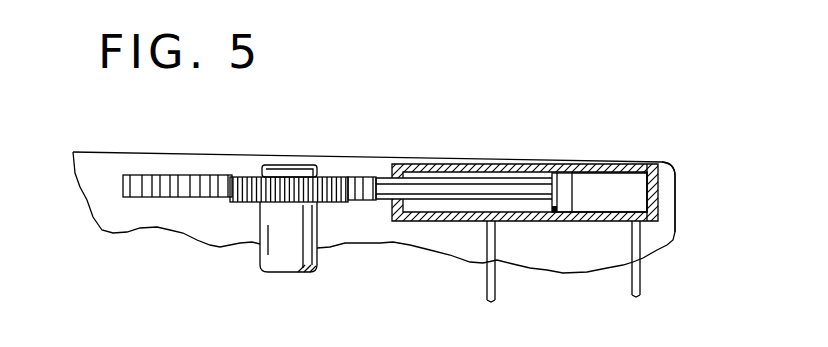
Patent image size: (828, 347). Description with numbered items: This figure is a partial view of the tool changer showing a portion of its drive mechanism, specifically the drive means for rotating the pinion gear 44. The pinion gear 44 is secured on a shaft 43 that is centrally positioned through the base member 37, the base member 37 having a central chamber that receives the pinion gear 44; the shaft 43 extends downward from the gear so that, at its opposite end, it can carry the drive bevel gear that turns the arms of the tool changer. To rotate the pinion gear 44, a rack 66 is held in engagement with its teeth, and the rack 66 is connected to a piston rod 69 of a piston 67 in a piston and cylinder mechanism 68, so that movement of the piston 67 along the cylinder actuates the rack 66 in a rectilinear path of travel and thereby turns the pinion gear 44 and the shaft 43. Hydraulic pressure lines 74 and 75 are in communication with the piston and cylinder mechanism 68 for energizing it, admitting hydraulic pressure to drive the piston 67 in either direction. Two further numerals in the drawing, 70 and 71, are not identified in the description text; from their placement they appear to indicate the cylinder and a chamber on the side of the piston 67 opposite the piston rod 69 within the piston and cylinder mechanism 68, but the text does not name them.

The base member 37 is at (228, 160).
The rack 66 is at (150, 178).
The pinion gear 44 is at (335, 182).
The shaft 43 is at (280, 262).
The cylinder 70 is at (447, 168).
The piston rod 69 is at (490, 188).
The piston 67 is at (562, 178).
The cylinder chamber 71 is at (633, 197).
The piston and cylinder mechanism 68 is at (656, 170).
The hydraulic pressure line 74 is at (480, 286).
The hydraulic pressure line 75 is at (630, 296).